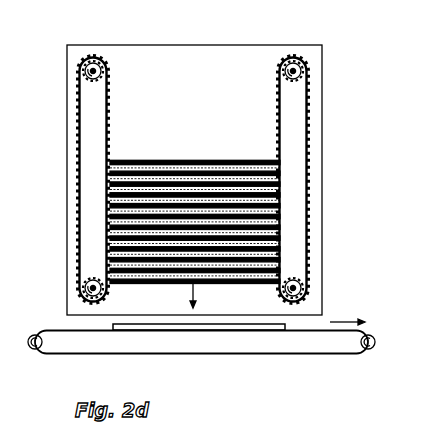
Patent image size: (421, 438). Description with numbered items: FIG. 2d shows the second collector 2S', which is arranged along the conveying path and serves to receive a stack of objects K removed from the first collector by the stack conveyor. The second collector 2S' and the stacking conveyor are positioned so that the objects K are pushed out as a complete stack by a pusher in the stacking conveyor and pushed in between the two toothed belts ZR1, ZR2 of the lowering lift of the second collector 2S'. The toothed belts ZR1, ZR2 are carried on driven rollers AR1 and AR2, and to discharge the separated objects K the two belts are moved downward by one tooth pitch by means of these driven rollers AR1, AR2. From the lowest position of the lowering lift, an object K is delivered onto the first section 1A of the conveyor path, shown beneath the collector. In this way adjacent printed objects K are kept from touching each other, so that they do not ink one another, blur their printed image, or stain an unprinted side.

The second collector 2S' is at (216, 166).
The driven roller AR1 is at (302, 68).
The driven roller AR2 is at (88, 67).
The toothed belt ZR1 is at (310, 93).
The toothed belt ZR2 is at (82, 115).
The objects K is at (140, 200).
The first section of the conveyor path 1A is at (201, 339).